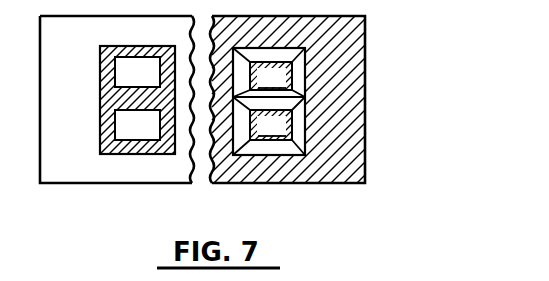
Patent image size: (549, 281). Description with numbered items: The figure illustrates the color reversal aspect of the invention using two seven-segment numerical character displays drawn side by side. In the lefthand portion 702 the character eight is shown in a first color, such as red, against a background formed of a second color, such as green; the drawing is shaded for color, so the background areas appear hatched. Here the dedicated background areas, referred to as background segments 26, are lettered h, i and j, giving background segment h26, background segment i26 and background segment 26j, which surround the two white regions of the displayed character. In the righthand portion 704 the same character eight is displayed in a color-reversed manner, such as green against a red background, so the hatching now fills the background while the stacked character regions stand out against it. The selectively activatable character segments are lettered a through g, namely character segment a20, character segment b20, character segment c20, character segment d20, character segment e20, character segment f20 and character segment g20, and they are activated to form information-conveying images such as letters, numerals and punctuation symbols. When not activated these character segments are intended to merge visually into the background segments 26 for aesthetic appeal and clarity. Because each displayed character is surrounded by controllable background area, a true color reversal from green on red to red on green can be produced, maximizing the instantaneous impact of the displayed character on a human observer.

The lefthand portion 702 is at (195, 182).
The righthand portion 704 is at (373, 182).
The background segment j 26j is at (82, 114).
The background segment h h26 is at (158, 84).
The background segment i i26 is at (158, 137).
The background segment 26 is at (348, 108).
The character segment a a20 is at (233, 48).
The character segment b b20 is at (238, 155).
The character segment c c20 is at (265, 148).
The character segment d d20 is at (271, 53).
The character segment e e20 is at (305, 122).
The character segment f f20 is at (305, 76).
The character segment g g20 is at (301, 138).